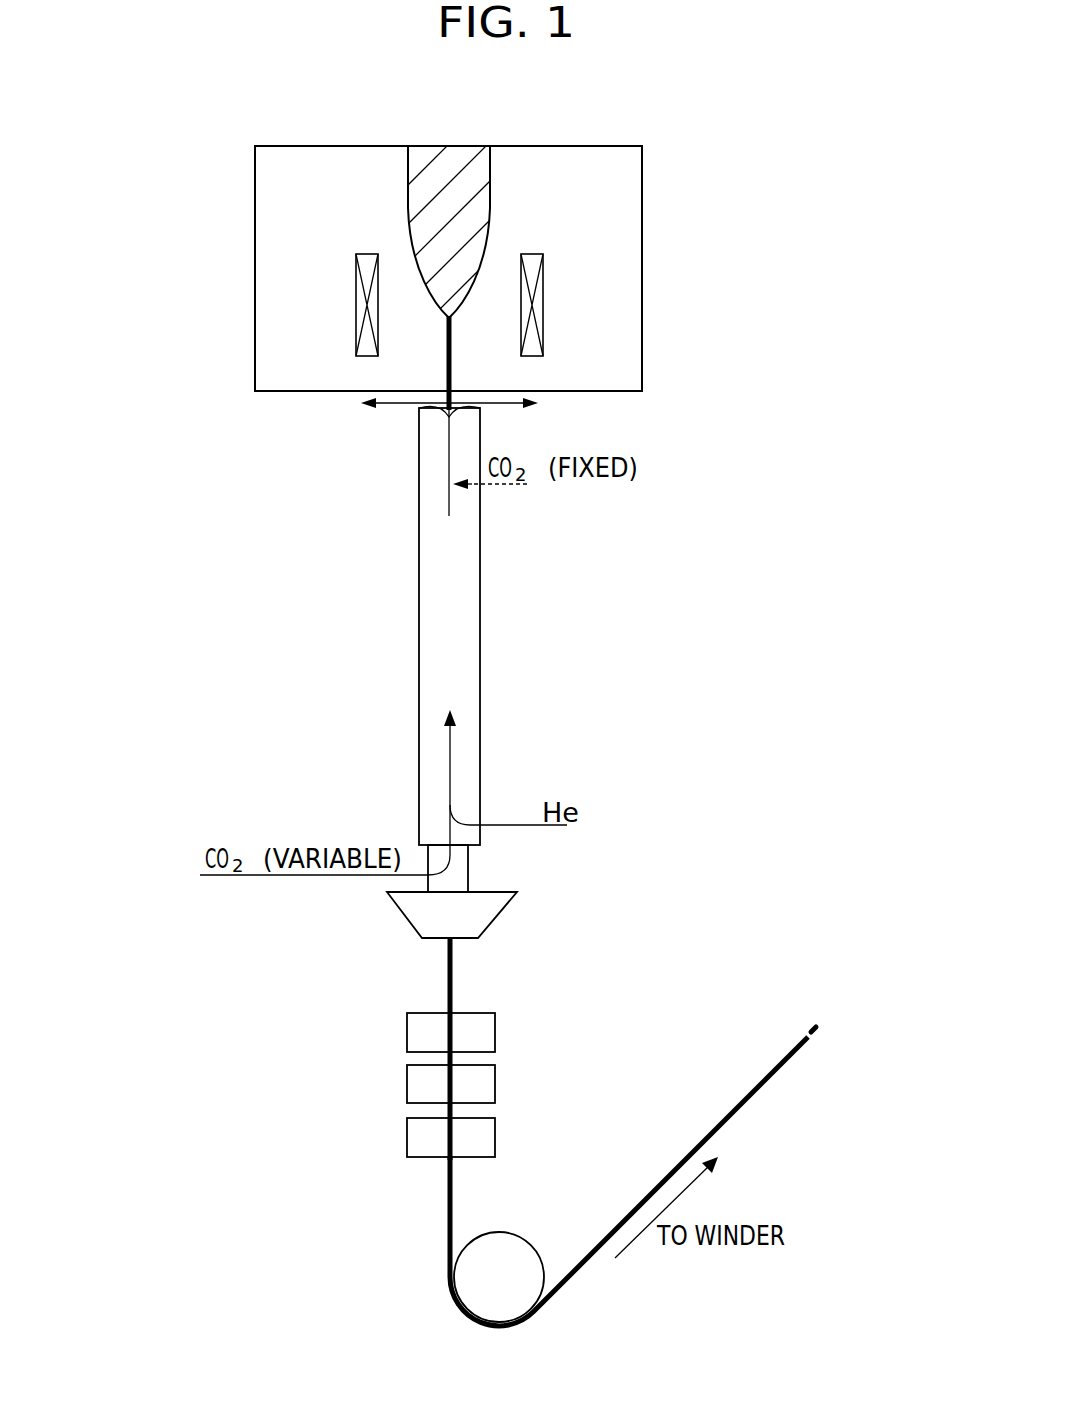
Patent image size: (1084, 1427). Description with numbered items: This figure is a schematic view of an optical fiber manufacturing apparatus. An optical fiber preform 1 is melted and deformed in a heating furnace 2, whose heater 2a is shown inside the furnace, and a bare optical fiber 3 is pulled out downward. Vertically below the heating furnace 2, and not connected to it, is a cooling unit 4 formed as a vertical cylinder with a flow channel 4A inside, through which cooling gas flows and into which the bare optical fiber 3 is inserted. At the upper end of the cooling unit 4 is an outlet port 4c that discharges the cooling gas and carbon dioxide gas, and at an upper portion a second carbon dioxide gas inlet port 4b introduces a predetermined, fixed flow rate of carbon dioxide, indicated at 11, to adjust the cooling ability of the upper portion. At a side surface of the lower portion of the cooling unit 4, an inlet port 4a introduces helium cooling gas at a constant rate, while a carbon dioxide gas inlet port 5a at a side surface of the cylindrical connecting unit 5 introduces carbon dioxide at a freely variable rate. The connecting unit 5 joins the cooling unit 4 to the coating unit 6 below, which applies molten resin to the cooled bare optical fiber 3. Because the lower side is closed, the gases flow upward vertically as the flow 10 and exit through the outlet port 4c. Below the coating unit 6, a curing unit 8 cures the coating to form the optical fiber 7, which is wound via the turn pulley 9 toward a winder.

The optical fiber preform 1 is at (490, 178).
The heating furnace 2 is at (642, 282).
The heater 2a is at (543, 326).
The bare optical fiber 3 is at (452, 367).
The cooling unit 4 is at (492, 613).
The flow channel 4A is at (422, 617).
The inlet port 4a is at (480, 827).
The second carbon dioxide gas inlet port 4b is at (478, 486).
The outlet port 4c is at (436, 408).
The connecting unit 5 is at (470, 868).
The carbon dioxide gas inlet port 5a is at (428, 880).
The coating unit 6 is at (492, 920).
The optical fiber 7 is at (448, 1205).
The curing unit 8 is at (507, 1012).
The turn pulley 9 is at (470, 1297).
The flow 10 is at (450, 748).
The CO2 gas supply position 11 is at (503, 484).